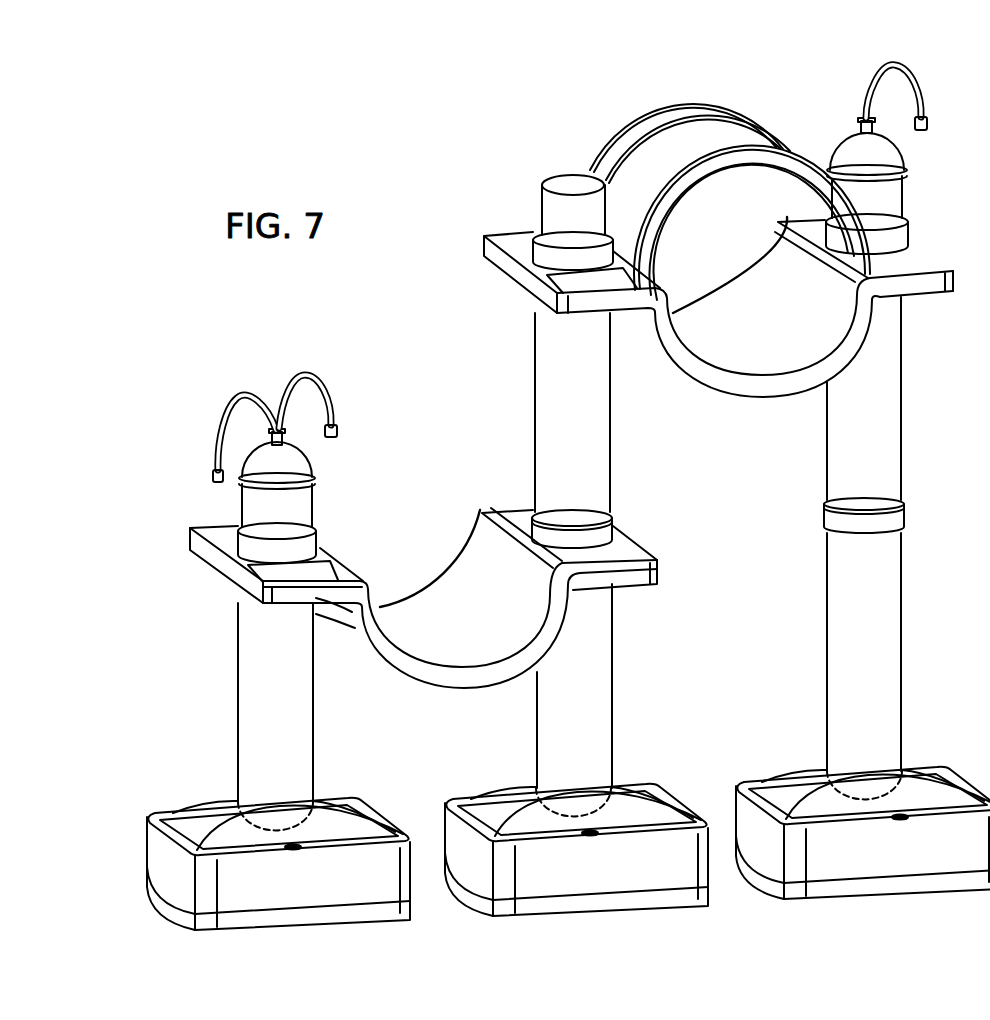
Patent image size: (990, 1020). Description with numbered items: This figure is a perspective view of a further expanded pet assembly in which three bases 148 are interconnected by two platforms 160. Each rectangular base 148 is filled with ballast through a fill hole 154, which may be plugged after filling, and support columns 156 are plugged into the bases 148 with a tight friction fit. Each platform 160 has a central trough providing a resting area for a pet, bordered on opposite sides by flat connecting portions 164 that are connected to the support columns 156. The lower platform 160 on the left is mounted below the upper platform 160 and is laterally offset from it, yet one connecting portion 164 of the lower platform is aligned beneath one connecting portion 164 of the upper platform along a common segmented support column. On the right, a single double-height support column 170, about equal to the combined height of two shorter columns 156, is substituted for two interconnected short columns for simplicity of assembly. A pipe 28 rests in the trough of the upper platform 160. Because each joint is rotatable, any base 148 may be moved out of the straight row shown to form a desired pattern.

The pipe 28 is at (660, 122).
The base 148 is at (625, 757).
The fill hole 154 is at (293, 847).
The support column 156 is at (238, 700).
The platform 160 is at (391, 569).
The connecting portion 164 is at (510, 270).
The support column 170 is at (837, 548).